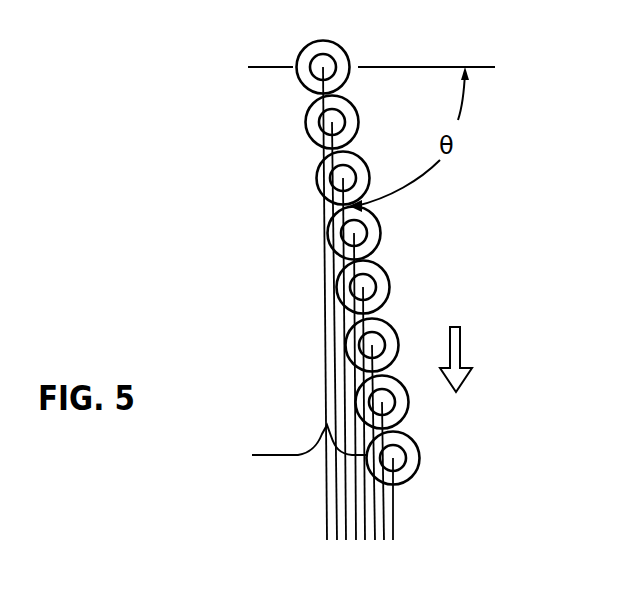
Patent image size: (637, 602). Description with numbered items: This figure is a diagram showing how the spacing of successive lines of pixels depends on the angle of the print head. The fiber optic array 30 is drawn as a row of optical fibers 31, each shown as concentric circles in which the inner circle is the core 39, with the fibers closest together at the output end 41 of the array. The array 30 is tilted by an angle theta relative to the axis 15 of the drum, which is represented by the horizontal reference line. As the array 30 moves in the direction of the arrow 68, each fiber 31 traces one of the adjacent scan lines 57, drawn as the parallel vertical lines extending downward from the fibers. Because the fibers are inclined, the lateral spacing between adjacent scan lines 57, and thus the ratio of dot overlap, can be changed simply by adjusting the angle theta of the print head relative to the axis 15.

The axis 15 is at (490, 65).
The fiber optic array 30 is at (362, 52).
The core 39 is at (377, 288).
The optical fiber 31 is at (409, 401).
The scan lines 57 is at (322, 350).
The arrow 68 is at (468, 346).
The output end 41 is at (163, 0).